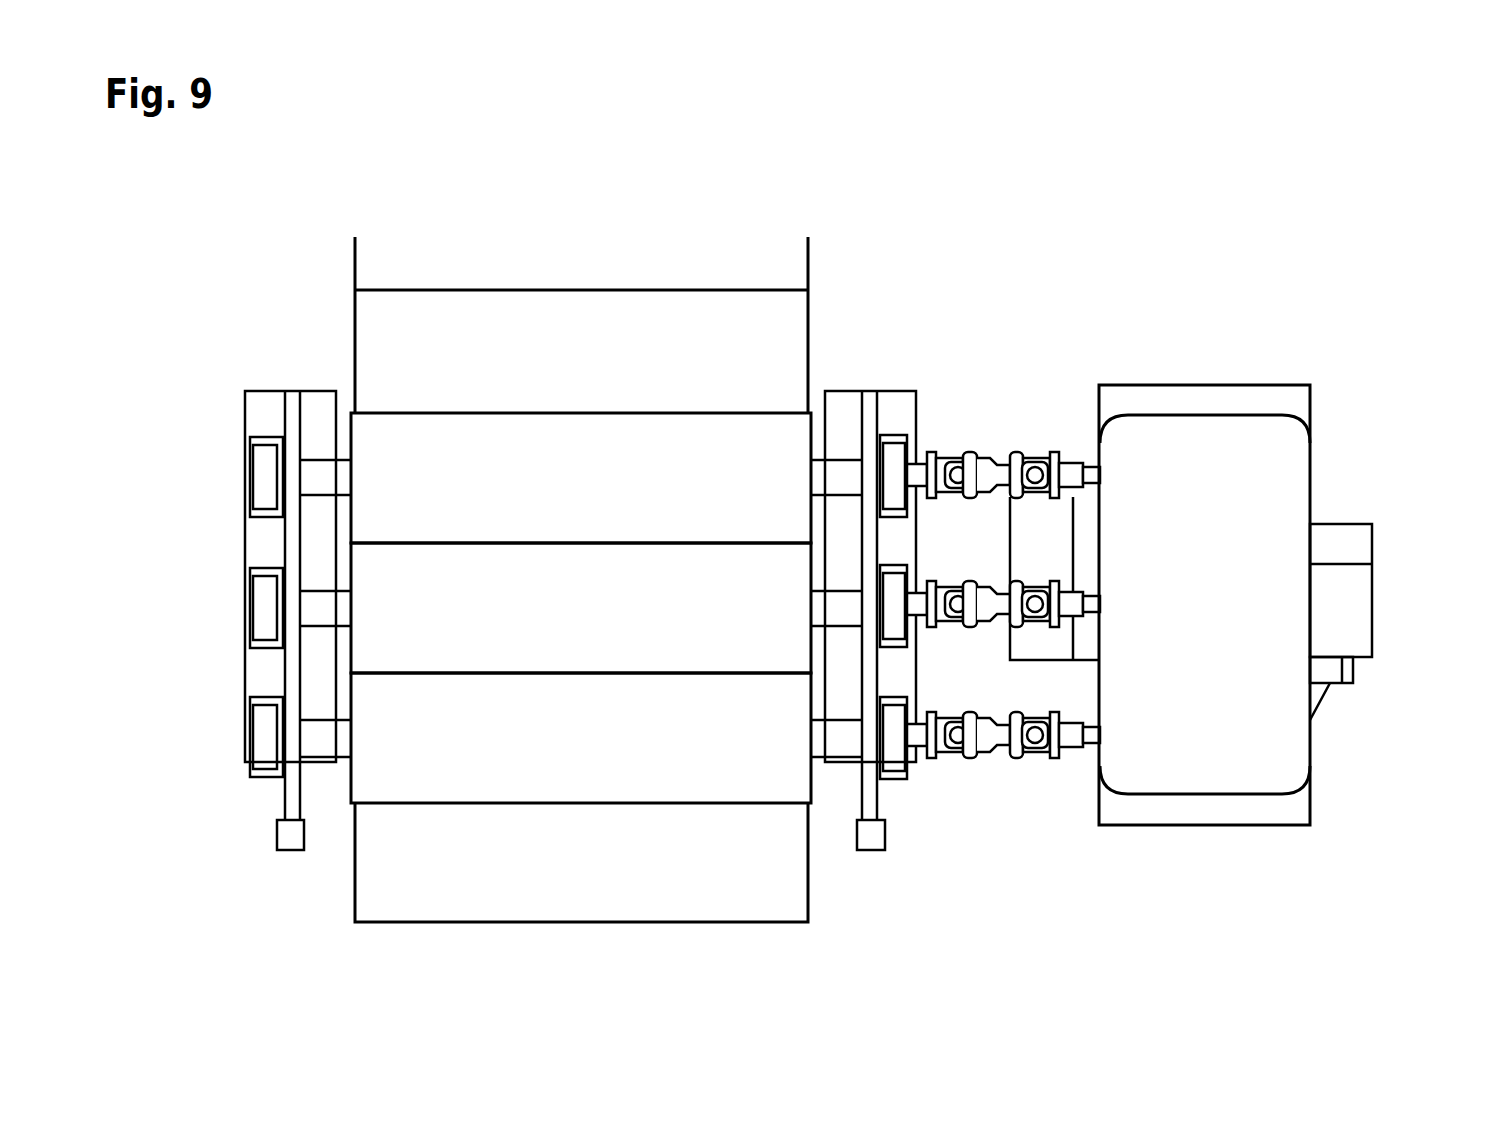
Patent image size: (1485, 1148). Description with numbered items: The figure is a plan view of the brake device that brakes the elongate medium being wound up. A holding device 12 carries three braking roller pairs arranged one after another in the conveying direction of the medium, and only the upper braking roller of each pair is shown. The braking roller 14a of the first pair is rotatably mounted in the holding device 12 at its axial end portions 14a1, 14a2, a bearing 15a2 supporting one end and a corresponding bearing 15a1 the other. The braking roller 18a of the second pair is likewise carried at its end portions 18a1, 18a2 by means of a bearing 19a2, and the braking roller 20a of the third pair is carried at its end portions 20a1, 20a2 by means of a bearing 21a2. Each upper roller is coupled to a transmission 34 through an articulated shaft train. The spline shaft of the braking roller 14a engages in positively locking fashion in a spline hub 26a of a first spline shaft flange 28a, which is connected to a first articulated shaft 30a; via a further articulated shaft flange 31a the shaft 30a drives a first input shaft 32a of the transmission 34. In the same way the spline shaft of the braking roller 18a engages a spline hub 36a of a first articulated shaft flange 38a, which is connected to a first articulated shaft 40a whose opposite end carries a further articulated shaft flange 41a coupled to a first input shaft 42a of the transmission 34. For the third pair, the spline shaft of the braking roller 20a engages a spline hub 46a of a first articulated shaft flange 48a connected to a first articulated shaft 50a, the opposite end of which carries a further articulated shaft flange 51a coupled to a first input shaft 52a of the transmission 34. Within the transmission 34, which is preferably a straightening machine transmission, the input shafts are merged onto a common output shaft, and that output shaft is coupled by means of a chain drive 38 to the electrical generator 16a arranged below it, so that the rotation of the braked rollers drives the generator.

The holding device 12 is at (290, 840).
The braking roller 14a is at (553, 790).
The axial end portion 14a1 is at (822, 743).
The axial end portion 14a2 is at (322, 748).
The first terminal contact of first cell 15a1 is at (893, 716).
The bearing 15a2 is at (262, 744).
The electrical generator 16a is at (1028, 646).
The braking roller 18a is at (595, 560).
The first terminal of second battery cell 18a1 is at (822, 612).
The second terminal of second battery cell 18a2 is at (322, 618).
The bearing 19a2 is at (521, 612).
The braking roller 20a is at (513, 428).
The braking roller 20a1 is at (822, 481).
The second terminal of third battery cell 20a2 is at (322, 487).
The bearing 21a2 is at (262, 483).
The spline hub 26a is at (958, 784).
The first spline shaft flange 28a is at (918, 742).
The first articulated shaft 30a is at (1005, 737).
The first fastening flange 31a is at (1058, 755).
The first input shaft 32a is at (1094, 738).
The transmission 34 is at (1250, 450).
The spline hub 36a is at (782, 616).
The chain drive 38 is at (1362, 607).
The first articulated shaft flange 38a is at (782, 616).
The first articulated shaft 40a is at (1008, 585).
The further articulated shaft flange 41a is at (1052, 580).
The first input shaft 42a is at (1094, 607).
The spline hub 46a is at (962, 427).
The first articulated shaft flange 48a is at (922, 457).
The first articulated shaft 50a is at (1008, 455).
The further articulated shaft flange 51a is at (1058, 455).
The first input shaft 52a is at (1094, 478).